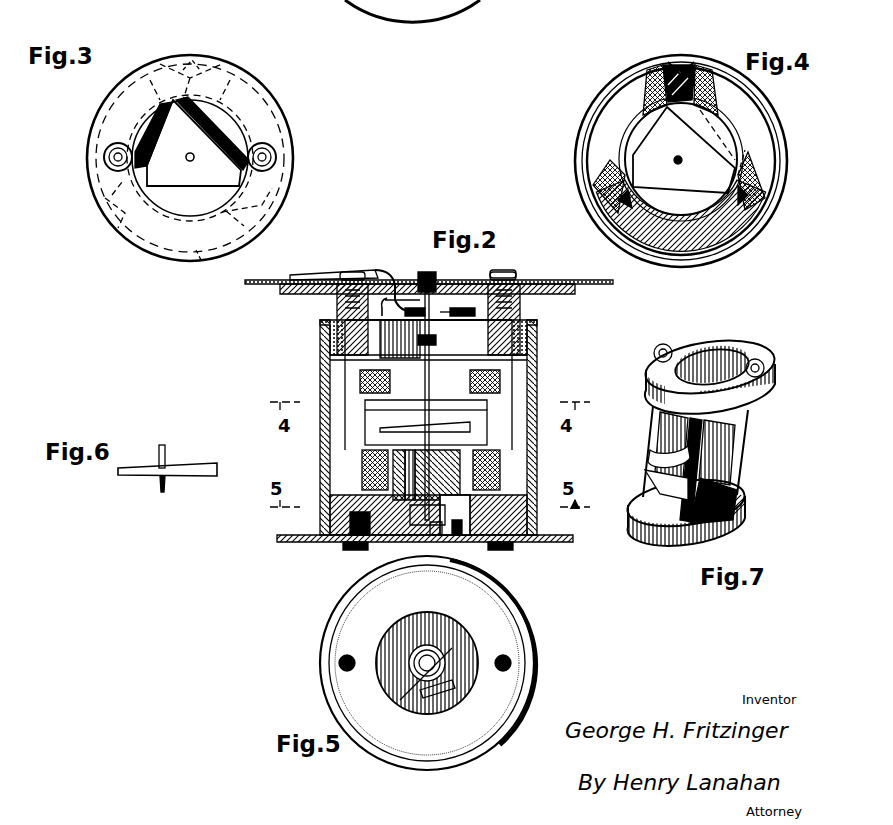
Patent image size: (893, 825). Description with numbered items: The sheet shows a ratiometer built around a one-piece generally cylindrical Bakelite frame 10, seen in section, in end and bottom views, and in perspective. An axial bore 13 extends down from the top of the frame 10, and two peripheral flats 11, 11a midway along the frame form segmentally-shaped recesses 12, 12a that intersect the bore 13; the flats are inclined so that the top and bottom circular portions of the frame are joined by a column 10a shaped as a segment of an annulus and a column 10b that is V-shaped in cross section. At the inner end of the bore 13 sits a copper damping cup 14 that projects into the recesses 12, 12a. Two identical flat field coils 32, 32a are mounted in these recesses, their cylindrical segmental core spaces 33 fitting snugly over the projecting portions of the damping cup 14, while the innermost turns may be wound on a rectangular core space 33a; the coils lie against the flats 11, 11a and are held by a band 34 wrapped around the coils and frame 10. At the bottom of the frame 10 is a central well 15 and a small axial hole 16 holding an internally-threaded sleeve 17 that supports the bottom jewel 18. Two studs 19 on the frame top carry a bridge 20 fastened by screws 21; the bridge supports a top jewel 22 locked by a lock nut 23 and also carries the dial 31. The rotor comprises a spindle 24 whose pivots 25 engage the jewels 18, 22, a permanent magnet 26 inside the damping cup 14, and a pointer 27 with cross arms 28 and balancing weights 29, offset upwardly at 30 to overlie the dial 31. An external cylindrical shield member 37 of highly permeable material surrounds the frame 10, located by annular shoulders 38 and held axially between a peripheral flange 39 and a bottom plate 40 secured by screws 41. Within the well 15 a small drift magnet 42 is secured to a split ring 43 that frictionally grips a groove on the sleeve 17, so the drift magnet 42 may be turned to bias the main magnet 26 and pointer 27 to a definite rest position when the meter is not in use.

In FIG. 3, the frame 10 is at (290, 94).
In FIG. 4, the frame 10 is at (762, 210).
In FIG. 2, the frame 10 is at (340, 496).
In FIG. 5, the frame 10 is at (340, 637).
In FIG. 7, the frame 10 is at (748, 442).
In FIG. 3, the column 10a is at (198, 255).
In FIG. 4, the column 10a is at (702, 240).
In FIG. 3, the column 10b is at (188, 72).
In FIG. 4, the column 10b is at (690, 68).
In FIG. 7, the peripheral flat 11 is at (740, 486).
In FIG. 3, the peripheral flat 11a is at (268, 207).
In FIG. 7, the peripheral flat 11a is at (652, 472).
In FIG. 4, the segmentally-shaped recess 12 is at (606, 131).
In FIG. 4, the segmentally-shaped recess 12a is at (748, 138).
In FIG. 2, the axial bore 13 is at (537, 388).
In FIG. 7, the axial bore 13 is at (722, 362).
In FIG. 3, the damping cup 14 is at (262, 232).
In FIG. 4, the damping cup 14 is at (600, 111).
In FIG. 2, the damping cup 14 is at (488, 428).
In FIG. 7, the damping cup 14 is at (662, 452).
In FIG. 2, the central well 15 is at (475, 540).
In FIG. 5, the central well 15 is at (478, 645).
In FIG. 2, the axial hole 16 is at (392, 540).
In FIG. 2, the internally-threaded sleeve 17 is at (405, 542).
In FIG. 5, the internally-threaded sleeve 17 is at (440, 680).
In FIG. 2, the bottom jewel 18 is at (500, 476).
In FIG. 5, the bottom jewel 18 is at (448, 640).
In FIG. 3, the stud 19 is at (105, 155).
In FIG. 2, the stud 19 is at (336, 305).
In FIG. 7, the stud 19 is at (668, 346).
In FIG. 2, the bridge 20 is at (596, 285).
In FIG. 2, the screw 21 is at (510, 272).
In FIG. 2, the top jewel 22 is at (450, 298).
In FIG. 2, the lock nut 23 is at (430, 270).
In FIG. 3, the spindle 24 is at (195, 158).
In FIG. 4, the spindle 24 is at (676, 157).
In FIG. 2, the spindle 24 is at (430, 388).
In FIG. 6, the spindle 24 is at (166, 452).
In FIG. 6, the pivot 25 is at (165, 490).
In FIG. 3, the permanent magnet 26 is at (180, 174).
In FIG. 4, the permanent magnet 26 is at (658, 183).
In FIG. 2, the permanent magnet 26 is at (372, 440).
In FIG. 6, the permanent magnet 26 is at (150, 478).
In FIG. 2, the pointer 27 is at (318, 272).
In FIG. 2, the cross arm 28 is at (478, 314).
In FIG. 2, the balancing weight 29 is at (482, 300).
In FIG. 2, the offset 30 is at (385, 284).
In FIG. 2, the dial 31 is at (598, 280).
In FIG. 3, the field coil 32 is at (142, 118).
In FIG. 4, the field coil 32 is at (655, 70).
In FIG. 2, the field coil 32 is at (362, 393).
In FIG. 3, the field coil 32a is at (236, 108).
In FIG. 4, the field coil 32a is at (760, 180).
In FIG. 2, the field coil 32a is at (540, 445).
In FIG. 4, the core space 33 is at (640, 110).
In FIG. 2, the core space 33 is at (404, 412).
In FIG. 4, the rectangular core space 33a is at (752, 160).
In FIG. 4, the band 34 is at (675, 62).
In FIG. 2, the cylindrical shield member 37 is at (537, 366).
In FIG. 5, the cylindrical shield member 37 is at (520, 620).
In FIG. 2, the annular shoulder 38 is at (537, 346).
In FIG. 5, the annular shoulder 38 is at (505, 604).
In FIG. 7, the annular shoulder 38 is at (772, 402).
In FIG. 2, the peripheral flange 39 is at (537, 324).
In FIG. 7, the peripheral flange 39 is at (776, 378).
In FIG. 2, the bottom plate 40 is at (300, 542).
In FIG. 2, the screw 41 is at (340, 552).
In FIG. 2, the drift magnet 42 is at (470, 540).
In FIG. 5, the drift magnet 42 is at (465, 692).
In FIG. 2, the split ring 43 is at (420, 540).
In FIG. 5, the split ring 43 is at (415, 672).